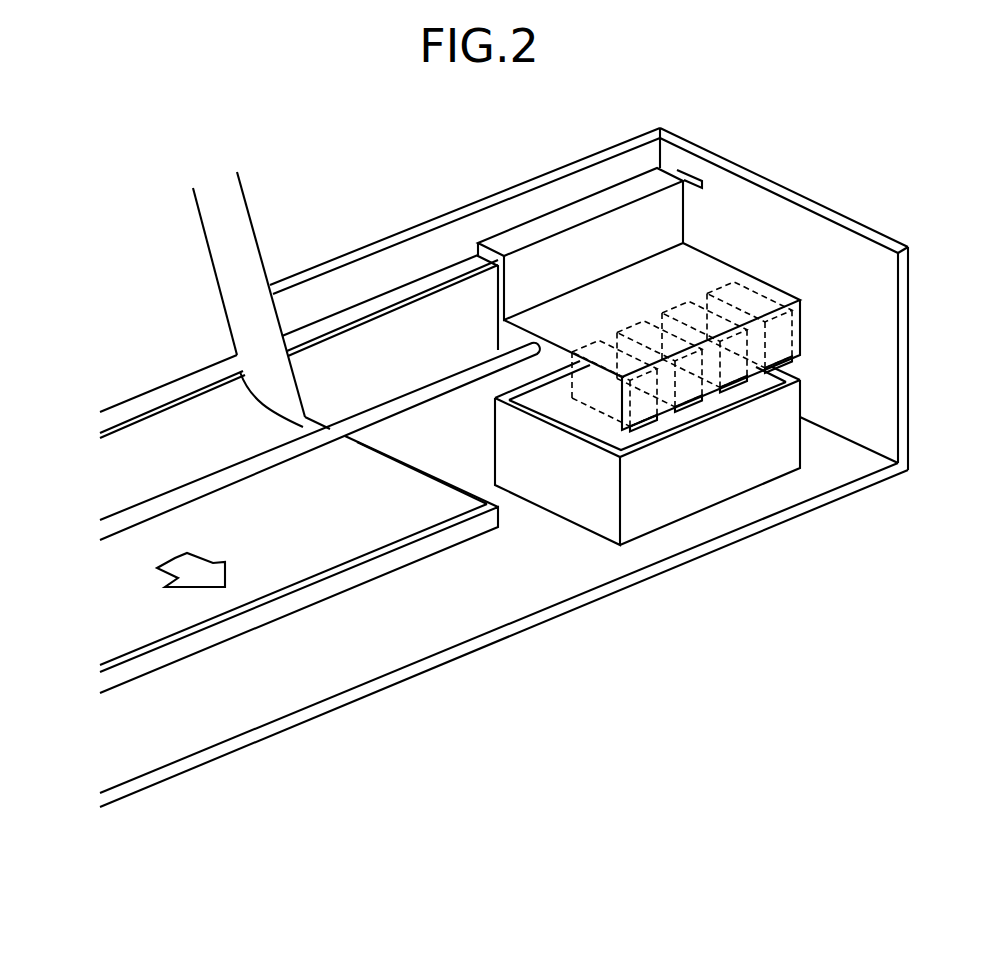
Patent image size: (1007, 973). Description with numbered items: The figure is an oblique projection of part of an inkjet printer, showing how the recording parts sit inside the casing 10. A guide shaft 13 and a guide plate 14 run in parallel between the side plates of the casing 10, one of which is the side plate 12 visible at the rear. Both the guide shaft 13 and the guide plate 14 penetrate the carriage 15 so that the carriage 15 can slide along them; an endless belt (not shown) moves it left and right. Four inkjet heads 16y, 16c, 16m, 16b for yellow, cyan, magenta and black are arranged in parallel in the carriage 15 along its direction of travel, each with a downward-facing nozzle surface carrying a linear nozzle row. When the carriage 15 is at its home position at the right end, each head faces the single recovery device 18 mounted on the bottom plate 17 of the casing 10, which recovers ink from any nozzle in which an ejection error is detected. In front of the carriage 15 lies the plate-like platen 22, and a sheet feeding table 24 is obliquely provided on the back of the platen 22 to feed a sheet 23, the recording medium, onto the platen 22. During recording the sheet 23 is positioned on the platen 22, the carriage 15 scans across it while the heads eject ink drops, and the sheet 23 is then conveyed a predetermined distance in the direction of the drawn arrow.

The casing 10 is at (322, 260).
The side plate 12 is at (753, 172).
The guide shaft 13 is at (185, 493).
The guide plate 14 is at (130, 410).
The carriage 15 is at (555, 220).
The inkjet head 16y is at (645, 430).
The inkjet head 16c is at (688, 410).
The inkjet head 16m is at (733, 385).
The inkjet head 16b is at (793, 370).
The bottom plate 17 is at (420, 668).
The recovery device 18 is at (715, 492).
The platen 22 is at (243, 625).
The sheet 23 is at (160, 285).
The sheet feeding table 24 is at (225, 227).